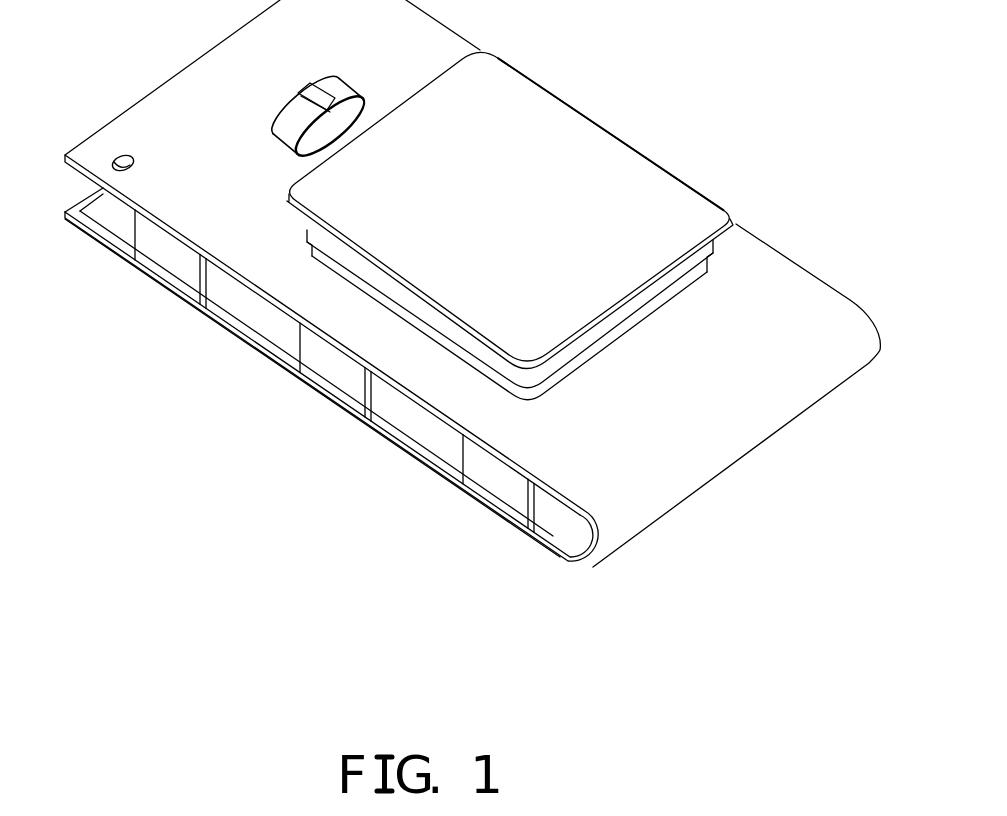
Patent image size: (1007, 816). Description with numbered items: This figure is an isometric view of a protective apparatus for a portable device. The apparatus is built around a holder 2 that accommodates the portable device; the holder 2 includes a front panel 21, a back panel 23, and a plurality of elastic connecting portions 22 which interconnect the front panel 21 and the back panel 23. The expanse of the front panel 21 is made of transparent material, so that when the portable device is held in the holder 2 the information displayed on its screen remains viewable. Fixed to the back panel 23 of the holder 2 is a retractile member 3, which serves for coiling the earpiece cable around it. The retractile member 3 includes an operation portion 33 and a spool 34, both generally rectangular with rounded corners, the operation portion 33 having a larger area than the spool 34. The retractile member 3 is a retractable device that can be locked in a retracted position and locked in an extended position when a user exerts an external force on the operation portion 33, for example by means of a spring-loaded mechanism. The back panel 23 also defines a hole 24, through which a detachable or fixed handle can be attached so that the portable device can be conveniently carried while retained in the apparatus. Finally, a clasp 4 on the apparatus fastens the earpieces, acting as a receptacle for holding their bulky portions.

The holder 2 is at (141, 350).
The front panel 21 is at (233, 329).
The elastic connecting portions 22 is at (322, 363).
The back panel 23 is at (423, 405).
The hole 24 is at (117, 153).
The retractile member 3 is at (581, 225).
The operation portion 33 is at (638, 190).
The spool 34 is at (570, 297).
The clasp 4 is at (292, 120).